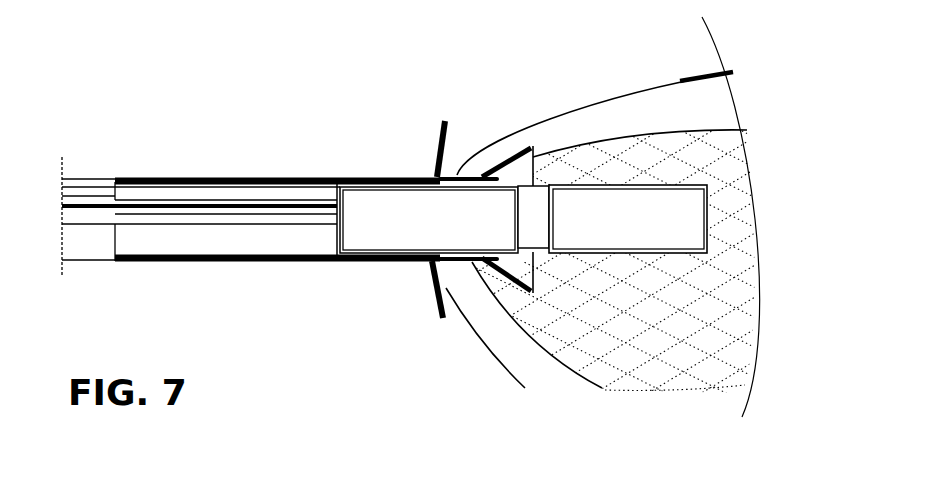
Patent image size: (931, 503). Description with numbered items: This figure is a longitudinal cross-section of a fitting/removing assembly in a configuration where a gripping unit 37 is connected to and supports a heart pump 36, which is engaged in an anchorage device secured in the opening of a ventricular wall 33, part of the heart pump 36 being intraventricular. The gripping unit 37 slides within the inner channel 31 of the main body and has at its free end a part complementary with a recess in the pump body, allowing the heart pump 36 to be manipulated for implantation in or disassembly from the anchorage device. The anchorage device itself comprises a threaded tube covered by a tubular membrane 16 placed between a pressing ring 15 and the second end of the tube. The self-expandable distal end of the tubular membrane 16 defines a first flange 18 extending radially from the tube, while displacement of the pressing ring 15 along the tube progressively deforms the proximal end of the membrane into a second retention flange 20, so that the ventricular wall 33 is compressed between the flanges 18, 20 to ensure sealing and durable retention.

The pressing ring 15 is at (370, 176).
The tubular membrane 16 is at (398, 262).
The first flange 18 is at (533, 147).
The second retention flange 20 is at (440, 138).
The inner channel 31 is at (182, 238).
The ventricular wall 33 is at (638, 113).
The heart pump 36 is at (594, 266).
The gripping unit 37 is at (285, 218).